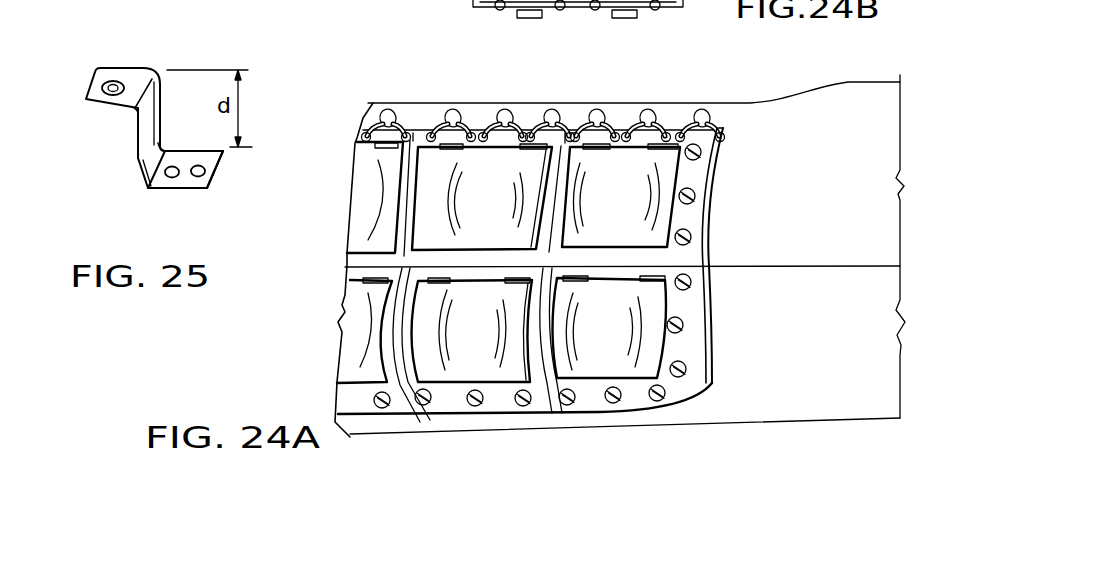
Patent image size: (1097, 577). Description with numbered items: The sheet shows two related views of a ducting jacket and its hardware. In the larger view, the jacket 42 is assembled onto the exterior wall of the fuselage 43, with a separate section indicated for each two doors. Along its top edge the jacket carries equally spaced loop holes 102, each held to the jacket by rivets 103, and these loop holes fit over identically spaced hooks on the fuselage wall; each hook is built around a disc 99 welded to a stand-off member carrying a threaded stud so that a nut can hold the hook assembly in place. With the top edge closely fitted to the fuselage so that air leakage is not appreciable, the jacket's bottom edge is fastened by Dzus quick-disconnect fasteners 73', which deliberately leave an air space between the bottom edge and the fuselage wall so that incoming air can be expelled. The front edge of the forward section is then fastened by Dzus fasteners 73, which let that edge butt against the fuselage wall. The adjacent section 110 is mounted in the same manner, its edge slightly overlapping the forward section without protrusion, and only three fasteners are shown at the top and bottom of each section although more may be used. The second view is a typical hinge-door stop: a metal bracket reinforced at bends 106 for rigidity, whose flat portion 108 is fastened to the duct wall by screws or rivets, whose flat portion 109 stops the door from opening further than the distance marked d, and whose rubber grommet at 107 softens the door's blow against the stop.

In FIG. 24A, the jacket 42 is at (337, 398).
In FIG. 24A, the fuselage 43 is at (733, 100).
In FIG. 24A, the Dzus fasteners 73 is at (723, 276).
In FIG. 24A, the Dzus quick-disconnect fasteners 73' is at (560, 429).
In FIG. 24A, the disc 99 is at (458, 110).
In FIG. 24A, the loop holes 102 is at (538, 118).
In FIG. 24A, the rivets 103 is at (403, 397).
In FIG. 24A, the adjacent section 110 is at (515, 415).
In FIG. 25, the bends 106 is at (165, 143).
In FIG. 25, the rubber grommet location 107 is at (112, 93).
In FIG. 25, the flat portion 108 is at (177, 188).
In FIG. 25, the flat portion 109 is at (132, 65).